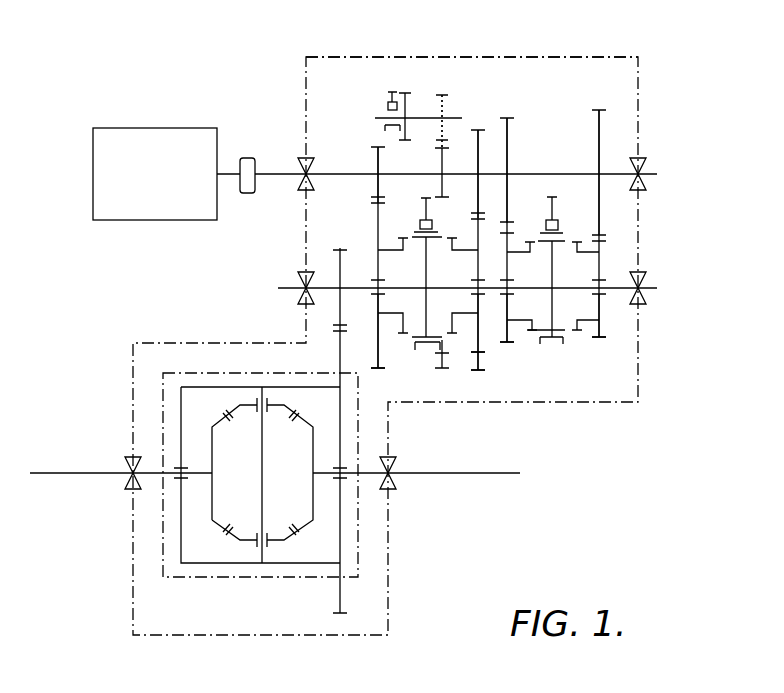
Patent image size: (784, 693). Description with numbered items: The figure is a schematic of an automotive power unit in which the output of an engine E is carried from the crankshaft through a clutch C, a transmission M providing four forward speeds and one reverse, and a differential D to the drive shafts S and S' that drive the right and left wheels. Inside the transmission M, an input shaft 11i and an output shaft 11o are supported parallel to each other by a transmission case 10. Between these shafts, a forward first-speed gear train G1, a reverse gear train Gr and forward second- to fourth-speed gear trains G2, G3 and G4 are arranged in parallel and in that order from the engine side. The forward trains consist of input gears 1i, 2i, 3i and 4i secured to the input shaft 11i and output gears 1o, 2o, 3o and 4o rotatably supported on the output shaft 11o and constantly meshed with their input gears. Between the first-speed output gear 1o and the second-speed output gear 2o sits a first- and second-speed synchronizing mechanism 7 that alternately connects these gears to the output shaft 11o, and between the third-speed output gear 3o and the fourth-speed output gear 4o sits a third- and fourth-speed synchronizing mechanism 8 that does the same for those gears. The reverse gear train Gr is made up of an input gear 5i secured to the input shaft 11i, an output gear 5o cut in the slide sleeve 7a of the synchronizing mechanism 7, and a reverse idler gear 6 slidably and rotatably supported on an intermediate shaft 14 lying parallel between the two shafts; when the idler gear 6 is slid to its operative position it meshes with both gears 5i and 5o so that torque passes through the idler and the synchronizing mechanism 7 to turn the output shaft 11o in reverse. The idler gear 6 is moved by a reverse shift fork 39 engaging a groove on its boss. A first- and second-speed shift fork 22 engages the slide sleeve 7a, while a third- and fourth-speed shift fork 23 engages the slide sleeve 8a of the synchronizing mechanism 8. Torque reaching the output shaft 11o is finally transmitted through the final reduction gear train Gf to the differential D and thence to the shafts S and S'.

The engine E is at (161, 191).
The clutch C is at (243, 157).
The input shaft 11i is at (288, 173).
The output shaft 11o is at (283, 288).
The transmission M is at (558, 93).
The transmission case 10 is at (640, 98).
The reverse gear train Gr is at (436, 89).
The reverse idler gear 6 is at (442, 96).
The intermediate shaft 14 is at (386, 117).
The reverse shift fork 39 is at (391, 92).
The forward first-speed gear train G1 is at (376, 148).
The forward second-speed gear train G2 is at (478, 124).
The forward third-speed gear train G3 is at (507, 114).
The forward fourth-speed gear train G4 is at (599, 112).
The first-speed input gear 1i is at (376, 160).
The second-speed input gear 2i is at (477, 157).
The third-speed input gear 3i is at (507, 146).
The fourth-speed input gear 4i is at (597, 145).
The reverse input gear 5i is at (440, 160).
The first-speed output gear 1o is at (377, 350).
The second-speed output gear 2o is at (478, 371).
The third-speed output gear 3o is at (507, 344).
The fourth-speed output gear 4o is at (599, 340).
The reverse output gear 5o is at (441, 368).
The first- and second-speed synchronizing mechanism 7 is at (426, 340).
The slide sleeve 7a is at (421, 352).
The first- and second-speed shift fork 22 is at (424, 210).
The third- and fourth-speed synchronizing mechanism 8 is at (552, 346).
The slide sleeve 8a is at (547, 345).
The third- and fourth-speed shift fork 23 is at (550, 210).
The final reduction gear train Gf is at (340, 246).
The differential D is at (188, 370).
The drive shaft S is at (121, 464).
The drive shaft S' is at (416, 463).